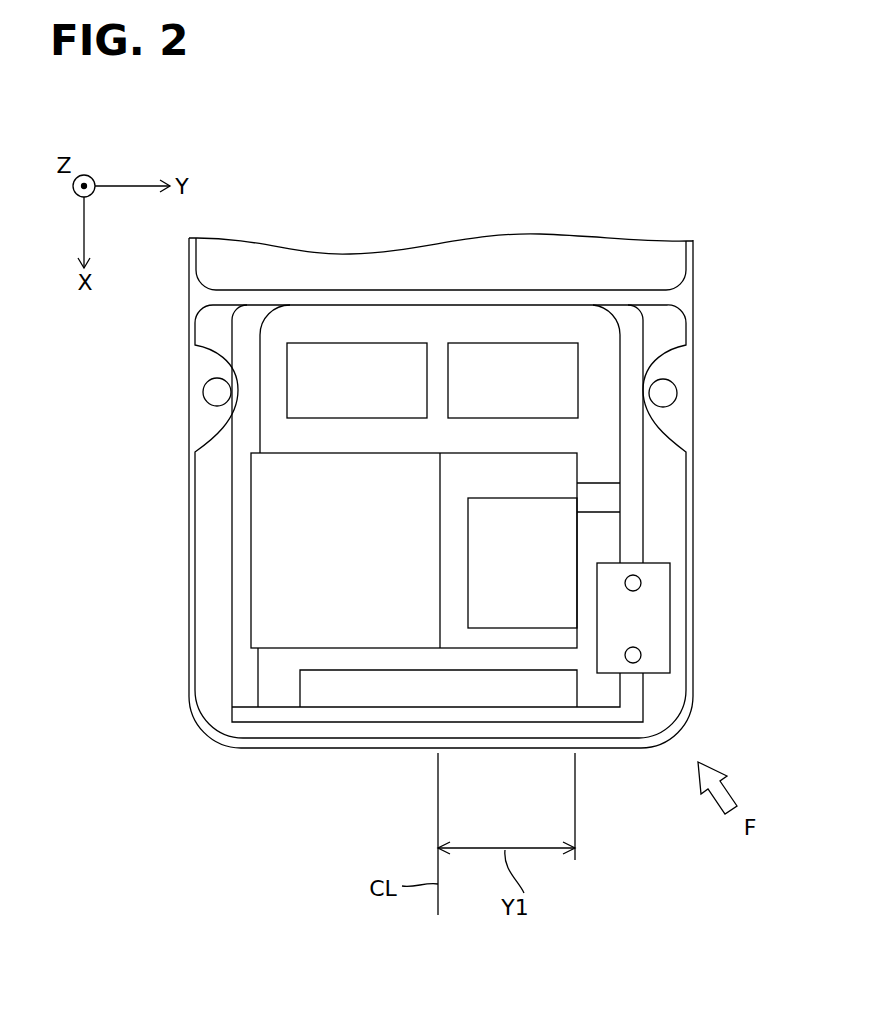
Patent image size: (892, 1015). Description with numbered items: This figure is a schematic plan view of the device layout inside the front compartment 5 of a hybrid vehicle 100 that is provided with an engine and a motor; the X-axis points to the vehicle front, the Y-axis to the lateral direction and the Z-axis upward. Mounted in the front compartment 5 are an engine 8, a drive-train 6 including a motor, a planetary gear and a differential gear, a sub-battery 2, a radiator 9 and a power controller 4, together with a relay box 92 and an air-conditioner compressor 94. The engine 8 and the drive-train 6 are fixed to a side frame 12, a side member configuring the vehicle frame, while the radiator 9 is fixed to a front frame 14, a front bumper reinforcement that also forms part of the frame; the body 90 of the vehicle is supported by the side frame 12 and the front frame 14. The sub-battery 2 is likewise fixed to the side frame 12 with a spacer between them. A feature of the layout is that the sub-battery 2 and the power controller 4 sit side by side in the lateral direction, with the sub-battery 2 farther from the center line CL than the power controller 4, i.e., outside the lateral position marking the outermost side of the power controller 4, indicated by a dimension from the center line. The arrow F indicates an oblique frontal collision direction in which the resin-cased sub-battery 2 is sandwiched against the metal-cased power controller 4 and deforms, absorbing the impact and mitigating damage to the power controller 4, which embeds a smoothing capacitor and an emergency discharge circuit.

The vehicle 100 is at (722, 156).
The body 90 is at (682, 367).
The front compartment 5 is at (592, 336).
The side frame 12 is at (640, 509).
The relay box 92 is at (352, 358).
The air-conditioner compressor 94 is at (514, 358).
The engine 8 is at (310, 545).
The power controller 4 is at (565, 547).
The drive-train 6 is at (567, 469).
The sub-battery 2 is at (653, 622).
The radiator 9 is at (363, 693).
The front frame 14 is at (278, 715).